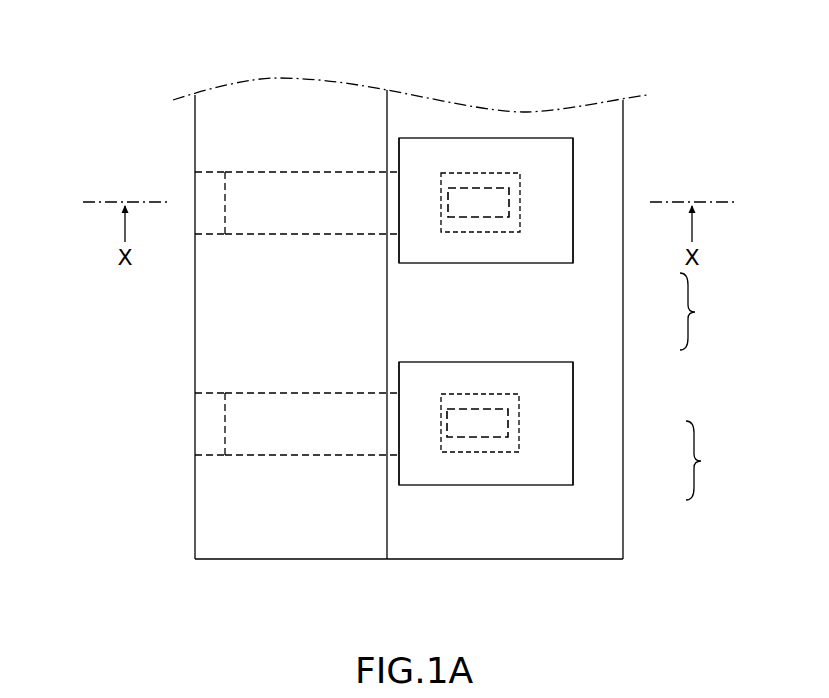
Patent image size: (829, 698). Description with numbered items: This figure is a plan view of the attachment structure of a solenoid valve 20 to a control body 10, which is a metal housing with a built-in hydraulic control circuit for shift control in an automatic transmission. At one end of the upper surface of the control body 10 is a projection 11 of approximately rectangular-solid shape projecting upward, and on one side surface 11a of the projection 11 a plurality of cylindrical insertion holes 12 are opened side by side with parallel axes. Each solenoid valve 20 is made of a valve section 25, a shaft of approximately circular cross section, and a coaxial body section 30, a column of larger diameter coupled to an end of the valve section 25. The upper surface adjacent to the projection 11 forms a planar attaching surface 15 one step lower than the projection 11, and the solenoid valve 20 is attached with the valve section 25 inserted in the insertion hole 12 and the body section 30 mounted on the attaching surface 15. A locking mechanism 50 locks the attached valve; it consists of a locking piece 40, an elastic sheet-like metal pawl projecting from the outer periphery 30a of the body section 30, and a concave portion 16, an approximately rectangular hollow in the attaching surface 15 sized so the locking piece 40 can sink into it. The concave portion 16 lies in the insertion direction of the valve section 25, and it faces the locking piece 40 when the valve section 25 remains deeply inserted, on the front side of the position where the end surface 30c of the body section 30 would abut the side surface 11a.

The control body 10 is at (195, 367).
The projection 11 is at (293, 100).
The side surface 11a is at (388, 106).
The insertion hole 12 is at (207, 183).
The attaching surface 15 is at (603, 121).
The concave portion 16 is at (520, 196).
The solenoid valve 20 is at (488, 132).
The valve section 25 is at (317, 188).
The body section 30 is at (540, 151).
The outer periphery 30a is at (557, 163).
The end surface 30c is at (399, 137).
The locking piece 40 is at (503, 210).
The locking mechanism 50 is at (706, 386).